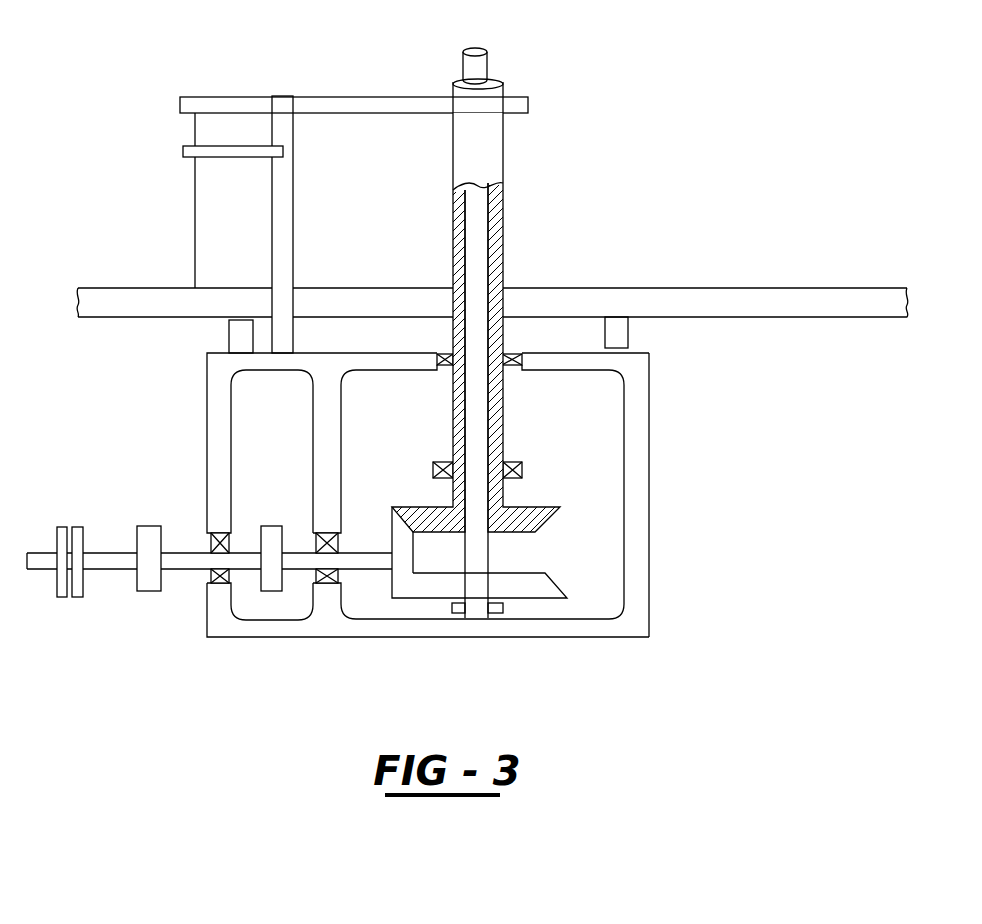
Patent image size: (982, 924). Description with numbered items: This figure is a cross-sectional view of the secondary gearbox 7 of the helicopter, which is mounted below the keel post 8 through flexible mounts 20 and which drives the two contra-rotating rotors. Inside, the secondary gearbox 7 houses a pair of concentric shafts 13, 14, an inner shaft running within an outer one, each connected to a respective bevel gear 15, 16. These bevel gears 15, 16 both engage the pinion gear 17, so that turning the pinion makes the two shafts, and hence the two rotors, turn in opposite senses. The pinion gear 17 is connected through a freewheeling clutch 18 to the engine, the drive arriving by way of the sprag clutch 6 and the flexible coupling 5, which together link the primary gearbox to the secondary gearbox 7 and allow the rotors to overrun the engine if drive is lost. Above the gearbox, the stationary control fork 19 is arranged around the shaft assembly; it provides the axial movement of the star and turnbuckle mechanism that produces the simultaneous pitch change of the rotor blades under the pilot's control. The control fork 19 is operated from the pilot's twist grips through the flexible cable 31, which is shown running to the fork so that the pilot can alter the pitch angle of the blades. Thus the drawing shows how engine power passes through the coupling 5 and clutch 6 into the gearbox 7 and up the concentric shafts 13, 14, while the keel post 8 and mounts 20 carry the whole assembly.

The flexible coupling 5 is at (62, 590).
The sprag clutch 6 is at (150, 580).
The secondary gearbox 7 is at (122, 445).
The keel post 8 is at (765, 305).
The concentric shaft 13 is at (503, 192).
The concentric shaft 14 is at (488, 238).
The bevel gear 15 is at (543, 585).
The bevel gear 16 is at (649, 503).
The pinion gear 17 is at (402, 563).
The freewheeling clutch 18 is at (271, 578).
The stationary control fork 19 is at (356, 105).
The flexible mount 20 is at (229, 333).
The flexible cable 31 is at (195, 222).